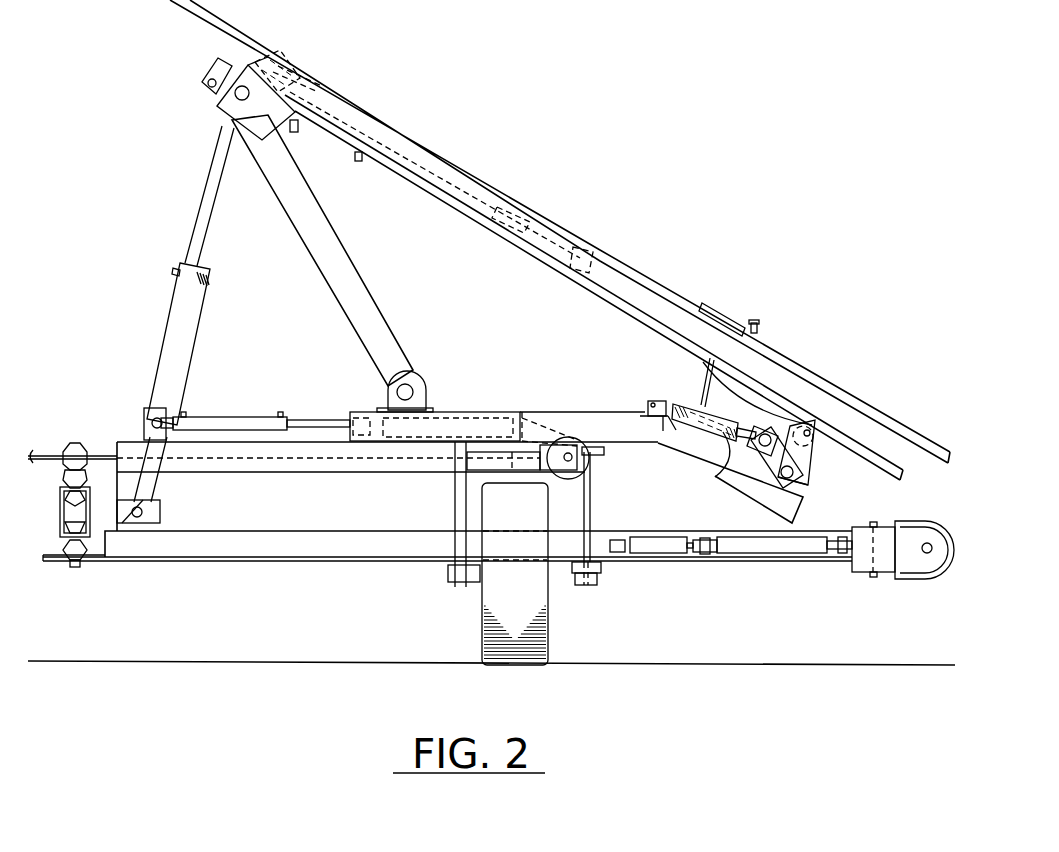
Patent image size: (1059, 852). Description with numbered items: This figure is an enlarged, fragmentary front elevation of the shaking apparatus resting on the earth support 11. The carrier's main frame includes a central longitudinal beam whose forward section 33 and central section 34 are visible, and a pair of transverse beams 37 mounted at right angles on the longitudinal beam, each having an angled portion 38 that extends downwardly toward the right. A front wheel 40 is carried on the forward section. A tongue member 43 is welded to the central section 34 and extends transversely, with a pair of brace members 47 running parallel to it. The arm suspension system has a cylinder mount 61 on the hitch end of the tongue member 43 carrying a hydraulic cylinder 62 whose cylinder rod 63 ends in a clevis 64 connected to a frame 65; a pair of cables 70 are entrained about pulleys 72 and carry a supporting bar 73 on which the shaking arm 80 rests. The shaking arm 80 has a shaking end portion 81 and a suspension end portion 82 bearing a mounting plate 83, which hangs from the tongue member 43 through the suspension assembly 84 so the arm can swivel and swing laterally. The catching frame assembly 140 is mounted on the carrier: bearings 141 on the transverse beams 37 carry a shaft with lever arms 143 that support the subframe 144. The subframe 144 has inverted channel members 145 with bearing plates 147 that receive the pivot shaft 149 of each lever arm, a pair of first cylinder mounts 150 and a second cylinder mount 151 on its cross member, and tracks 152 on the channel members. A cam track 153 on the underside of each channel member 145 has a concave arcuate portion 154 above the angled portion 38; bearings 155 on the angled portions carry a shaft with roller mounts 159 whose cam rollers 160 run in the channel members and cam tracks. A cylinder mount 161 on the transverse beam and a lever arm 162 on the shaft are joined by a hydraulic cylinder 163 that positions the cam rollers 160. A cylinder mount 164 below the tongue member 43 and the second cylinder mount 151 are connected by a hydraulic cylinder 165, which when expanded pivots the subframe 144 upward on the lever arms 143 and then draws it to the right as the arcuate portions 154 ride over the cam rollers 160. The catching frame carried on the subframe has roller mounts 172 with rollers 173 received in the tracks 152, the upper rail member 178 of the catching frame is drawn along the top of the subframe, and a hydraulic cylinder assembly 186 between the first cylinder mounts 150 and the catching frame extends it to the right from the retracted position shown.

The earth support 11 is at (670, 664).
The forward section 33 is at (543, 412).
The central section 34 is at (505, 464).
The transverse beams 37 is at (573, 408).
The angled portions 38 is at (685, 462).
The front wheel 40 is at (482, 592).
The tongue member 43 is at (197, 460).
The brace members 47 is at (340, 472).
The cylinder mount 61 is at (150, 408).
The hydraulic cylinder 62 is at (200, 418).
The cylinder rod 63 is at (320, 420).
The clevis 64 is at (367, 410).
The frame 65 is at (455, 412).
The cables 70 is at (588, 505).
The pulleys 72 is at (590, 492).
The supporting bar 73 is at (603, 585).
The shaking arm 80 is at (425, 553).
The shaking end portion 81 is at (680, 561).
The suspension end portion 82 is at (200, 563).
The mounting plate 83 is at (90, 562).
The suspension assembly 84 is at (60, 510).
The catching frame assembly 140 is at (521, 180).
The bearings 141 is at (432, 395).
The lever arms 143 is at (378, 305).
The subframe 144 is at (462, 210).
The channel members 145 is at (622, 308).
The bearing plates 147 is at (236, 135).
The pivot shaft 149 is at (234, 98).
The first cylinder mounts 150 is at (204, 70).
The second cylinder mount 151 is at (215, 57).
The tracks 152 is at (618, 287).
The cam track 153 is at (702, 395).
The concave arcuate portion 154 is at (707, 367).
The bearings 155 is at (800, 488).
The roller mounts 159 is at (808, 465).
The cam roller 160 is at (808, 428).
The cylinder mount 161 is at (650, 403).
The lever arm 162 is at (734, 477).
The hydraulic cylinder 163 is at (718, 478).
The cylinder mount 164 is at (127, 512).
The hydraulic cylinder 165 is at (182, 262).
The roller mounts 172 is at (282, 63).
The roller 173 is at (300, 90).
The top rail 178 is at (450, 158).
The hydraulic cylinder assembly 186 is at (322, 132).